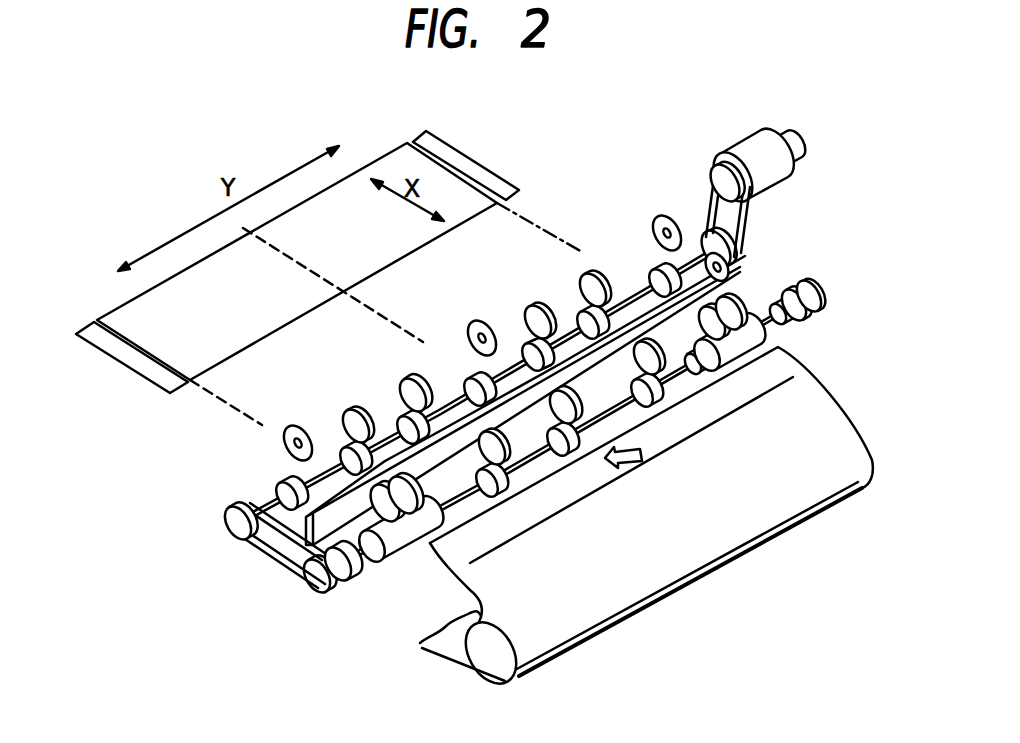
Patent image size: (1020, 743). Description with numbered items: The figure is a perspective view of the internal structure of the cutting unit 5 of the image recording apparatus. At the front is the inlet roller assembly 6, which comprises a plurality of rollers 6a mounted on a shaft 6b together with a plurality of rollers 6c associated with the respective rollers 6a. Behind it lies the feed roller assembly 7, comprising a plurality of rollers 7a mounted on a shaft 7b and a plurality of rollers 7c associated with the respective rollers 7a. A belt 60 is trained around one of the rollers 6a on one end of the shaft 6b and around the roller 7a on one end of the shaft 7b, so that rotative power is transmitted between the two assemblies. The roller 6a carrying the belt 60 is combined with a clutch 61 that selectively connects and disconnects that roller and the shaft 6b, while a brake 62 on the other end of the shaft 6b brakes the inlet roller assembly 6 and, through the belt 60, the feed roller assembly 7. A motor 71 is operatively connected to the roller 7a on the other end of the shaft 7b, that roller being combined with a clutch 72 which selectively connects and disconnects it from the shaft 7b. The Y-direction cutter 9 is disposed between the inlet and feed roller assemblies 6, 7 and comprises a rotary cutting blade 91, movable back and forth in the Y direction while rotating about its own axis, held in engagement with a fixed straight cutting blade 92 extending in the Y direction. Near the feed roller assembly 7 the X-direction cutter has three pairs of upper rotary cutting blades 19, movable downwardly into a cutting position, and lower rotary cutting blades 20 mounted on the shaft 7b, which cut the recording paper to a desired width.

The cutting unit 5 is at (548, 200).
The inlet roller assembly 6 is at (321, 598).
The rollers 6a is at (390, 563).
The shaft 6b is at (472, 505).
The rollers 6c is at (518, 440).
The feed roller assembly 7 is at (220, 500).
The rollers 7a is at (377, 437).
The shaft 7b is at (623, 287).
The rollers 7c is at (590, 280).
The Y-direction cutter 9 is at (820, 232).
The upper rotary cutting blades 19 is at (297, 427).
The lower rotary cutting blades 20 is at (287, 480).
The belt 60 is at (272, 562).
The clutch 61 is at (345, 582).
The brake 62 is at (815, 306).
The motor 71 is at (746, 150).
The clutch 72 is at (712, 237).
The rotary cutting blade 91 is at (740, 263).
The fixed straight cutting blade 92 is at (735, 285).